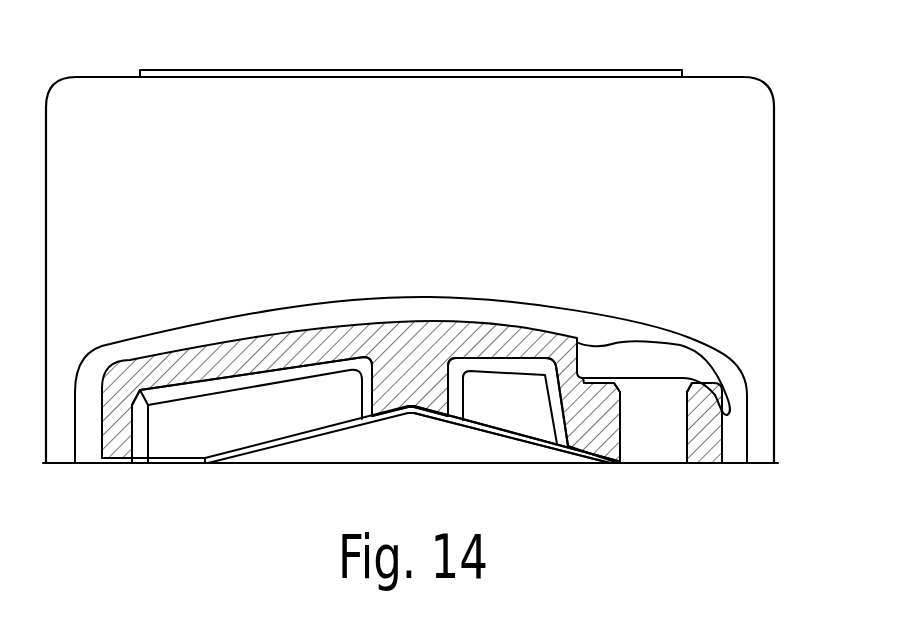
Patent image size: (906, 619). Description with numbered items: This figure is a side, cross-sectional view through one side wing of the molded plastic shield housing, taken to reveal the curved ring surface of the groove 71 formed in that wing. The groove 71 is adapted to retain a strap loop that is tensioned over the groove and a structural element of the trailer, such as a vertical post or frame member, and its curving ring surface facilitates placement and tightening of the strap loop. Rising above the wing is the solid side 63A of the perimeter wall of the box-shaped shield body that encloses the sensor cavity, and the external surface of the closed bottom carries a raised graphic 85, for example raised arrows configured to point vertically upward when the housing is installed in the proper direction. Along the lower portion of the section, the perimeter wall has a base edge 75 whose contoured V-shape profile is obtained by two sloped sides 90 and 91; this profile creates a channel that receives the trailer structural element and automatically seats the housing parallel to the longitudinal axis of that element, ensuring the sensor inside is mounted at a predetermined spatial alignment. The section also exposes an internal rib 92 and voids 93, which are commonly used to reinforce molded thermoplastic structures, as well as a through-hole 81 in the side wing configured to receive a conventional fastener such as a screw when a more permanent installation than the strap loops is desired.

The solid side 63A is at (690, 108).
The raised graphic 85 is at (512, 70).
The groove 71 is at (320, 322).
The voids 93 is at (186, 436).
The sloped side 90 is at (358, 432).
The sloped side 91 is at (487, 428).
The internal rib 92 is at (400, 388).
The base edge 75 is at (233, 463).
The through-hole 81 is at (650, 450).